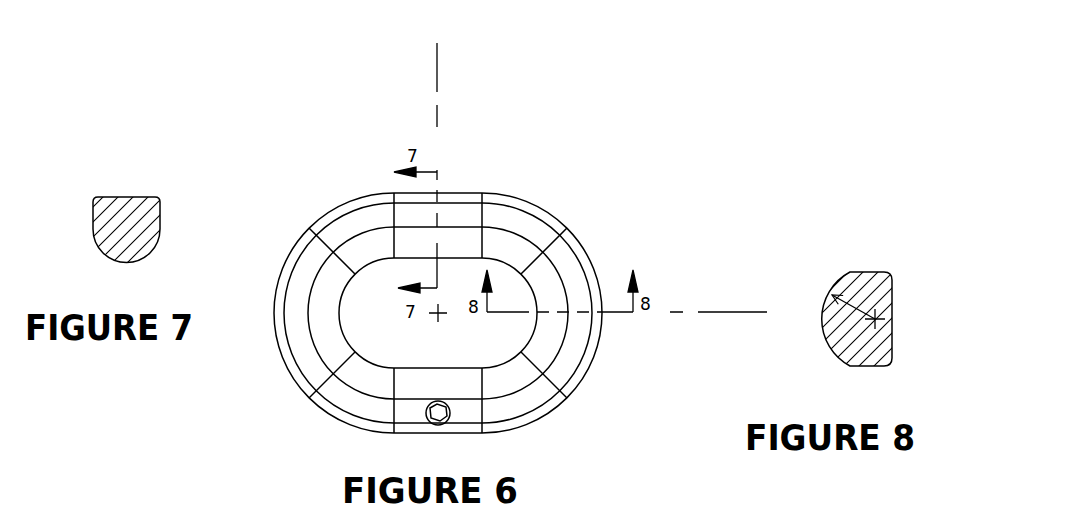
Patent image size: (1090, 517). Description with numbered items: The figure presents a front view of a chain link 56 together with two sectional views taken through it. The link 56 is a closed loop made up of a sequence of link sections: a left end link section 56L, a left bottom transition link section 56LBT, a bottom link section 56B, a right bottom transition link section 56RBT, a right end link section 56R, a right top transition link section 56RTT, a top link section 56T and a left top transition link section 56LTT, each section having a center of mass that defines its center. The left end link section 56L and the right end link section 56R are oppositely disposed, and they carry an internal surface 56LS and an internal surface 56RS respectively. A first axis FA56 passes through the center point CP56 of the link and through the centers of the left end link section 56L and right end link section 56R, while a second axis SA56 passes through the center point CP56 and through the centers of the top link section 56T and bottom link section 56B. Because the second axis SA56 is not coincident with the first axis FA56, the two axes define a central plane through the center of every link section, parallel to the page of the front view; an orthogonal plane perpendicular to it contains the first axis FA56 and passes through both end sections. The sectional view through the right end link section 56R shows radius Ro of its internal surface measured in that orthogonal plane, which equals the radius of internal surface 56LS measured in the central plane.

In FIG. 6, the link 56 is at (441, 279).
In FIG. 7, the link 56 is at (130, 175).
In FIG. 8, the link 56 is at (900, 297).
In FIG. 6, the top link section 56T is at (452, 190).
In FIG. 6, the bottom link section 56B is at (432, 365).
In FIG. 6, the left end link section 56L is at (273, 297).
In FIG. 6, the right end link section 56R is at (590, 250).
In FIG. 6, the internal surface of left end link section 56LS is at (340, 327).
In FIG. 6, the internal surface of right end link section 56RS is at (527, 298).
In FIG. 6, the left top transition link section 56LTT is at (342, 205).
In FIG. 6, the right top transition link section 56RTT is at (530, 200).
In FIG. 6, the left bottom transition link section 56LBT is at (338, 418).
In FIG. 6, the right bottom transition link section 56RBT is at (548, 417).
In FIG. 6, the center point CP56 is at (437, 322).
In FIG. 6, the second axis SA56 is at (445, 62).
In FIG. 6, the first axis FA56 is at (713, 310).
In FIG. 8, the radius of internal surface of right end link section Ro is at (866, 300).